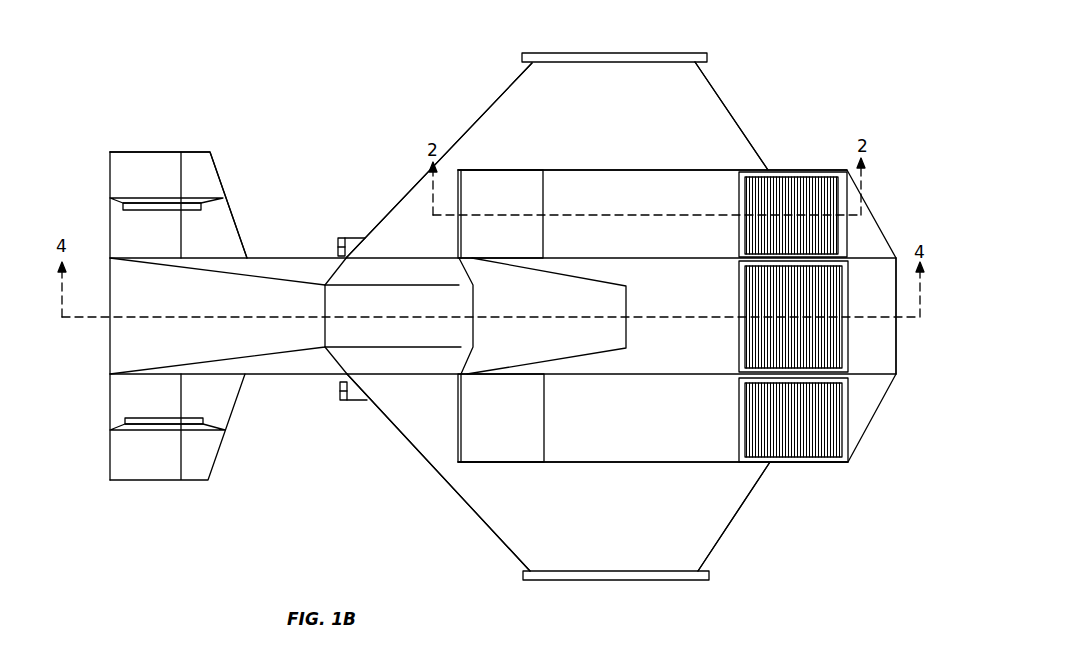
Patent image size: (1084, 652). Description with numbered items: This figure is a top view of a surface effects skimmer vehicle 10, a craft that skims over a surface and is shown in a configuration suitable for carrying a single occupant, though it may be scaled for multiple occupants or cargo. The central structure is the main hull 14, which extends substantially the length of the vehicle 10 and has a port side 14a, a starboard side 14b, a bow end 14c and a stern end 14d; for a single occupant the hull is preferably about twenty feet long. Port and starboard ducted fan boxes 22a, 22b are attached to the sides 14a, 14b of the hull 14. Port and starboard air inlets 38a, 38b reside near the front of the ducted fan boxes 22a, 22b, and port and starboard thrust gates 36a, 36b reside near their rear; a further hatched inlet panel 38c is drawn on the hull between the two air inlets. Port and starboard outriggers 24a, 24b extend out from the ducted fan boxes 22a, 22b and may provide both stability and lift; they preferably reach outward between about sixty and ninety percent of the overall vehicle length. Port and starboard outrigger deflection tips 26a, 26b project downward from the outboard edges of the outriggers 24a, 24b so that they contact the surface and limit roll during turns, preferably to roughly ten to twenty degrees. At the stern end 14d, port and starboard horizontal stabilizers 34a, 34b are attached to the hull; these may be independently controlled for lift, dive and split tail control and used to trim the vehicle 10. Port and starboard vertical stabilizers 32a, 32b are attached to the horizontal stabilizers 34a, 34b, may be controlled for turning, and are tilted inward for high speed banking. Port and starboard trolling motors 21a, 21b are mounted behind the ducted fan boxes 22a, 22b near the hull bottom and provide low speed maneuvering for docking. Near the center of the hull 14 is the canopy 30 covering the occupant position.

The surface effects skimmer vehicle 10 is at (395, 140).
The main hull 14 is at (885, 283).
The port side 14a is at (765, 143).
The starboard side 14b is at (750, 502).
The bow end 14c is at (902, 337).
The stern end 14d is at (167, 135).
The port trolling motor 21a is at (352, 242).
The starboard trolling motor 21b is at (355, 400).
The port ducted fan box 22a is at (548, 147).
The starboard ducted fan box 22b is at (582, 418).
The port outrigger 24a is at (597, 159).
The starboard outrigger 24b is at (597, 472).
The port outrigger deflection tip 26a is at (620, 58).
The starboard outrigger deflection tip 26b is at (555, 578).
The canopy 30 is at (357, 307).
The port vertical stabilizer 32a is at (185, 202).
The starboard vertical stabilizer 32b is at (190, 427).
The port horizontal stabilizer 34a is at (185, 179).
The starboard horizontal stabilizer 34b is at (205, 435).
The port thrust gate 36a is at (500, 214).
The starboard thrust gate 36b is at (501, 418).
The port air inlet 38a is at (790, 195).
The starboard air inlet 38b is at (787, 462).
The third panel 38c is at (820, 345).